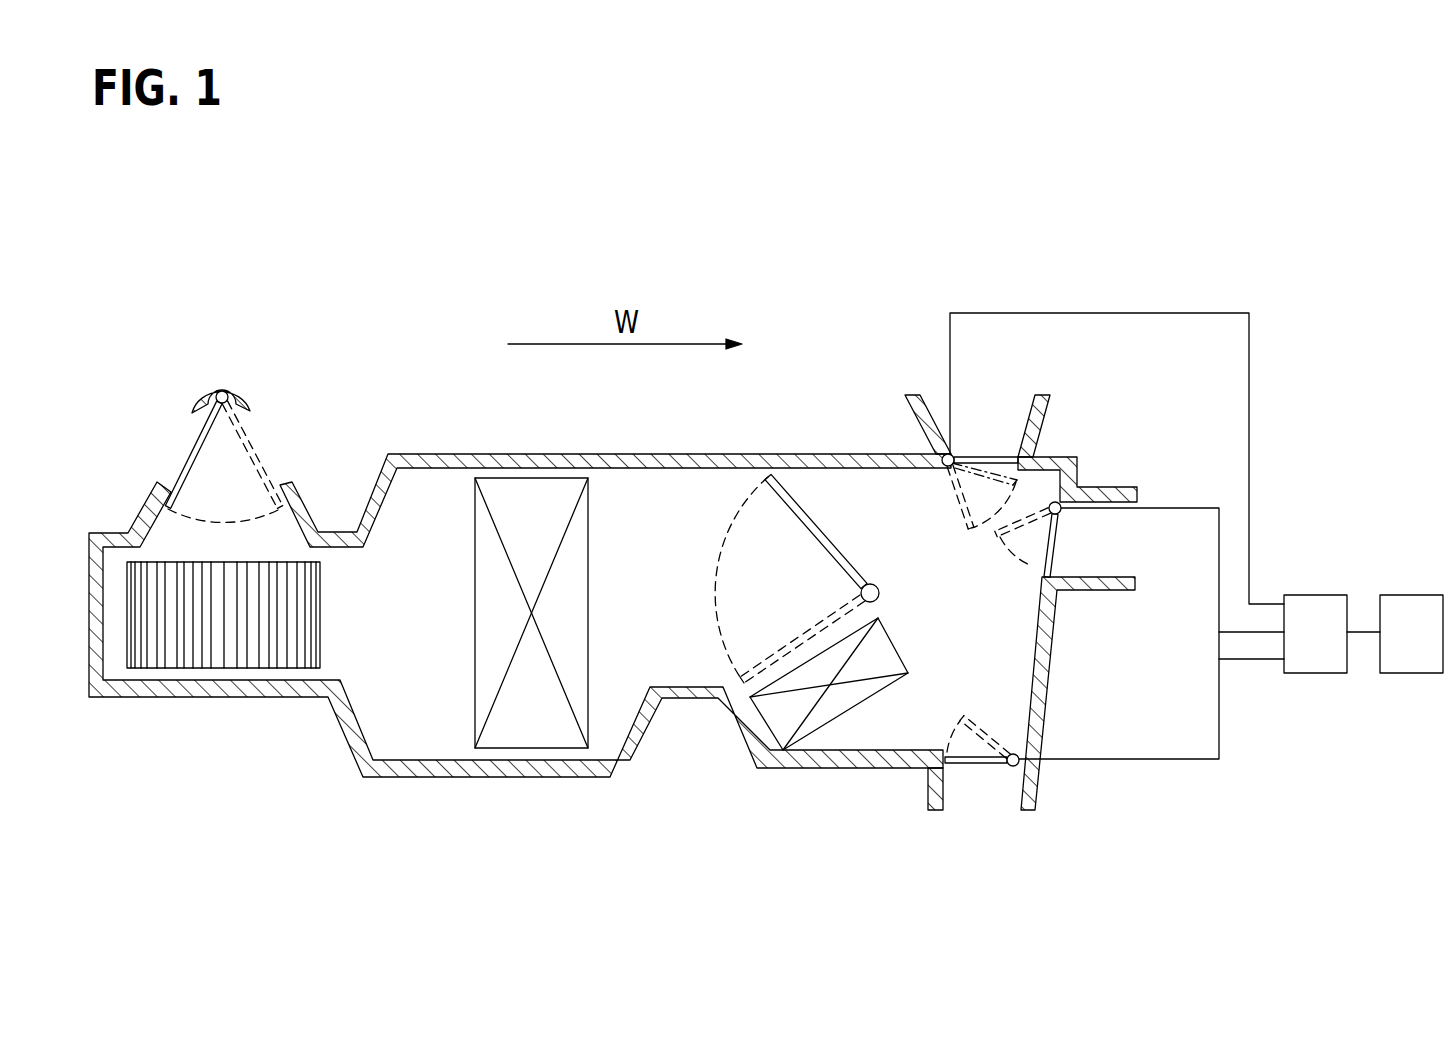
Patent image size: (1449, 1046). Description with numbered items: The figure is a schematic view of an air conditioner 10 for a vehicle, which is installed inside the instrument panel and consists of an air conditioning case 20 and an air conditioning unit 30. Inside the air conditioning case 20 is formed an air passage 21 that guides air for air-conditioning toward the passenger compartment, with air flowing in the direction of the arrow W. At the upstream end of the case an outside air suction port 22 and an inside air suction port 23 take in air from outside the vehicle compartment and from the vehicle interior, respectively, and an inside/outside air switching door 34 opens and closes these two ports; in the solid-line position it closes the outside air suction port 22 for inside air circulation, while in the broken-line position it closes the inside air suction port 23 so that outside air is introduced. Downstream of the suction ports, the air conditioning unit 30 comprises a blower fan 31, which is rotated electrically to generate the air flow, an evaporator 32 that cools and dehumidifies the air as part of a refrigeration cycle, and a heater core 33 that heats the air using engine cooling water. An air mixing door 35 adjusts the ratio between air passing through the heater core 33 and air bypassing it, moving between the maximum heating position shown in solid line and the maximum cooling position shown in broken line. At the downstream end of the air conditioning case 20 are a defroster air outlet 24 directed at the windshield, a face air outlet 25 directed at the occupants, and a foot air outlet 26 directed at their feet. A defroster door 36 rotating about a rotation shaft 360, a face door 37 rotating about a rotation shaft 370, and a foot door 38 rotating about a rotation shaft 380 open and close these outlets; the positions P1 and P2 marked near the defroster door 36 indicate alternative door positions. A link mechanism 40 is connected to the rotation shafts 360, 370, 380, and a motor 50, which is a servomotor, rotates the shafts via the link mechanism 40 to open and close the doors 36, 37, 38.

The air conditioner 10 is at (1110, 235).
The air conditioning case 20 is at (547, 453).
The air passage 21 is at (662, 472).
The outside air suction port 22 is at (193, 412).
The inside air suction port 23 is at (243, 410).
The defroster air outlet 24 is at (927, 407).
The face air outlet 25 is at (1127, 570).
The foot air outlet 26 is at (1022, 795).
The air conditioning unit 30 is at (426, 484).
The blower fan 31 is at (322, 618).
The evaporator 32 is at (588, 583).
The heater core 33 is at (862, 705).
The inside/outside air switching door 34 is at (180, 462).
The air mixing door 35 is at (812, 515).
The defroster door 36 is at (990, 453).
The rotation shaft 360 is at (947, 470).
The face door 37 is at (1043, 553).
The rotation shaft 370 is at (1065, 518).
The foot door 38 is at (987, 768).
The rotation shaft 380 is at (1013, 747).
The first door position P1 is at (1017, 453).
The second door position P2 is at (980, 522).
The link mechanism 40 is at (1318, 595).
The motor 50 is at (1418, 595).